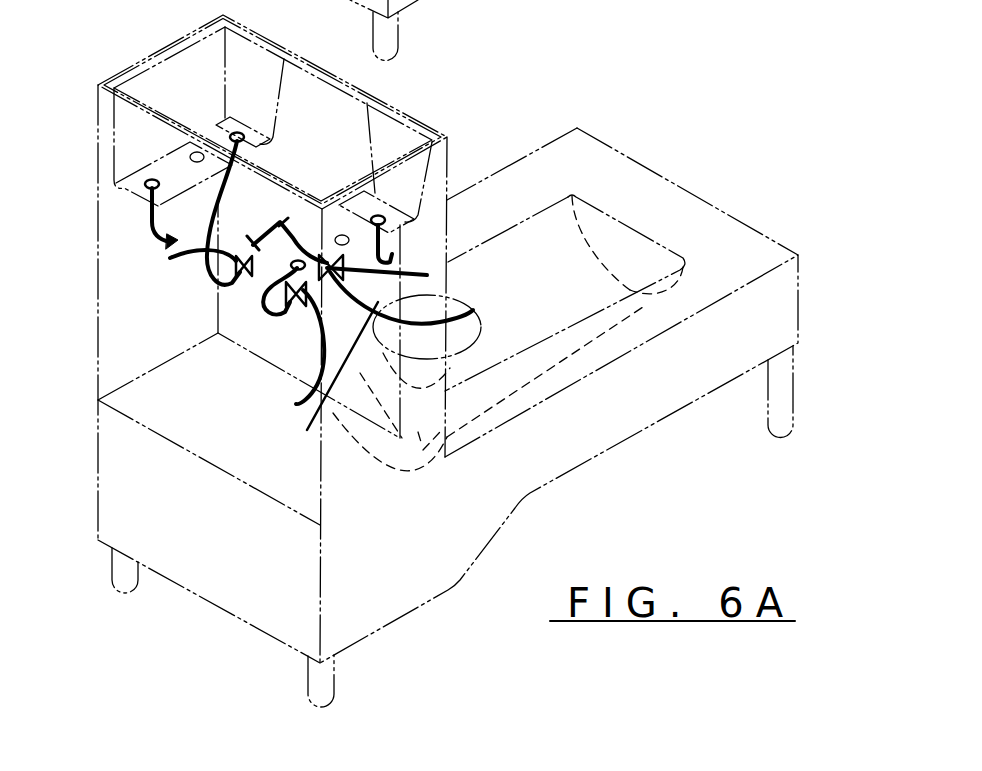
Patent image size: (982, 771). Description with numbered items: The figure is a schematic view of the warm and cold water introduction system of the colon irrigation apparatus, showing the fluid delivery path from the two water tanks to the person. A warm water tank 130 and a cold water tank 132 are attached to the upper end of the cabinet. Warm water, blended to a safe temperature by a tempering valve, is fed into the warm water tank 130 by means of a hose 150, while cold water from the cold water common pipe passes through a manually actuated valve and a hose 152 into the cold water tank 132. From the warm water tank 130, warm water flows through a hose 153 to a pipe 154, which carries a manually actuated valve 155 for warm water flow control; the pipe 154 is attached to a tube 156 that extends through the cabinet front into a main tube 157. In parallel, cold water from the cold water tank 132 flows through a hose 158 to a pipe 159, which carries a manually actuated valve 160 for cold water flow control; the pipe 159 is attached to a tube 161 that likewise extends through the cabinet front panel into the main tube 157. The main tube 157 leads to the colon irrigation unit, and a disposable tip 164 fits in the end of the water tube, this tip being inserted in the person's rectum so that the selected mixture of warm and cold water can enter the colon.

The warm water tank 130 is at (380, 128).
The cold water tank 132 is at (232, 43).
The hose 150 is at (385, 240).
The hose 152 is at (150, 218).
The hose 153 is at (277, 303).
The pipe 154 is at (282, 358).
The manually actuated valve 155 is at (297, 312).
The tube 156 is at (427, 275).
The main tube 157 is at (316, 382).
The hose 158 is at (223, 193).
The pipe 159 is at (178, 255).
The manually actuated valve 160 is at (234, 270).
The tube 161 is at (298, 233).
The disposable tip 164 is at (473, 310).